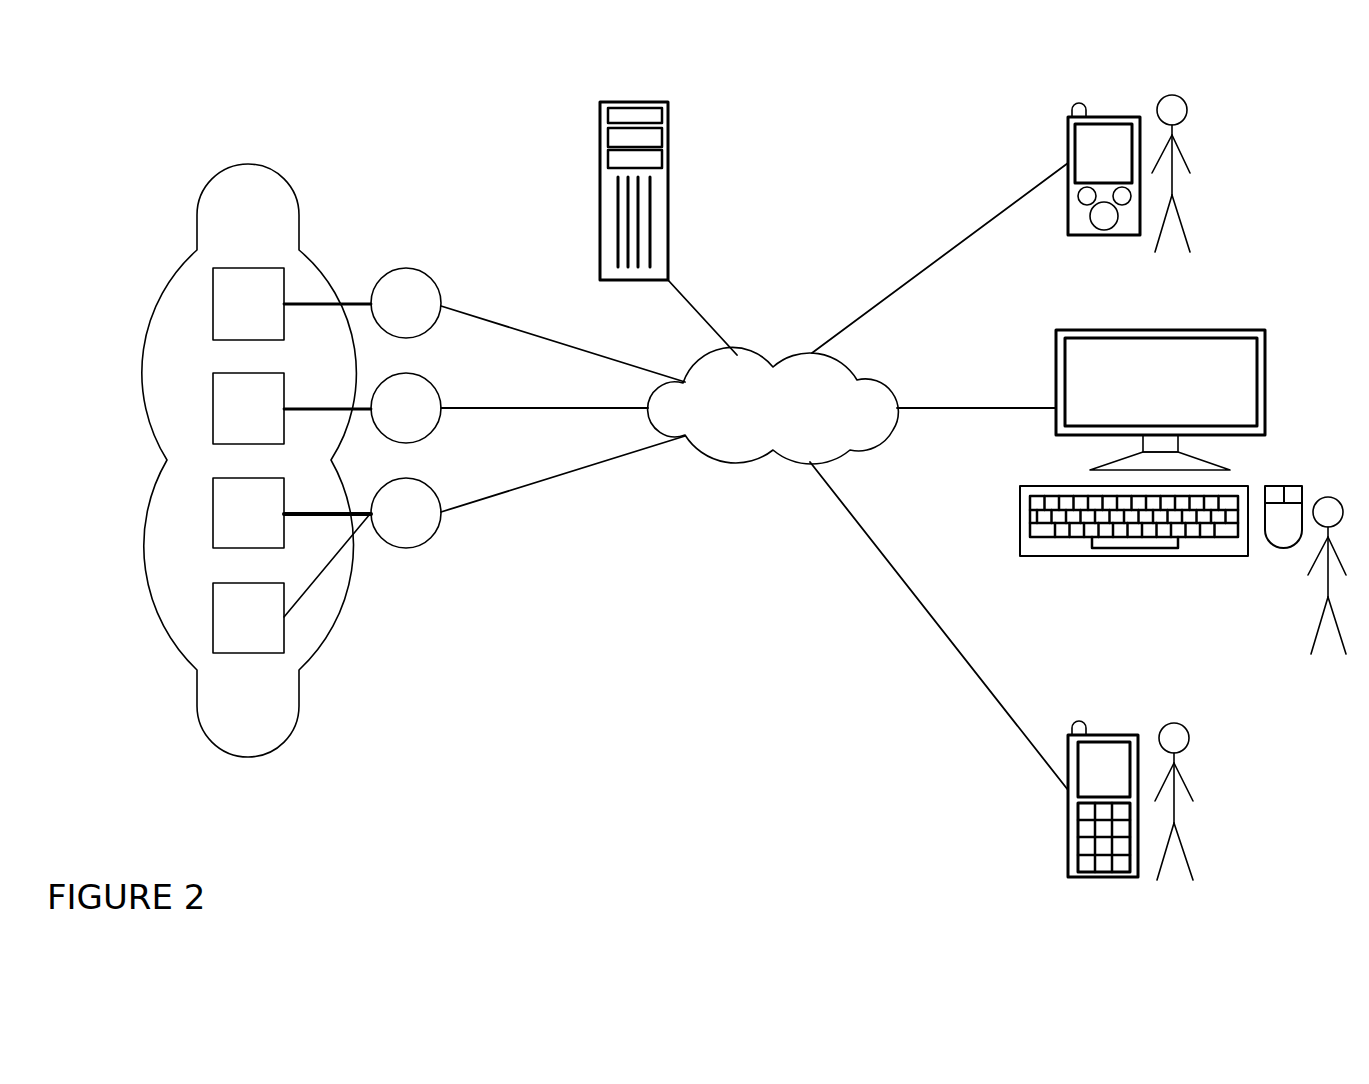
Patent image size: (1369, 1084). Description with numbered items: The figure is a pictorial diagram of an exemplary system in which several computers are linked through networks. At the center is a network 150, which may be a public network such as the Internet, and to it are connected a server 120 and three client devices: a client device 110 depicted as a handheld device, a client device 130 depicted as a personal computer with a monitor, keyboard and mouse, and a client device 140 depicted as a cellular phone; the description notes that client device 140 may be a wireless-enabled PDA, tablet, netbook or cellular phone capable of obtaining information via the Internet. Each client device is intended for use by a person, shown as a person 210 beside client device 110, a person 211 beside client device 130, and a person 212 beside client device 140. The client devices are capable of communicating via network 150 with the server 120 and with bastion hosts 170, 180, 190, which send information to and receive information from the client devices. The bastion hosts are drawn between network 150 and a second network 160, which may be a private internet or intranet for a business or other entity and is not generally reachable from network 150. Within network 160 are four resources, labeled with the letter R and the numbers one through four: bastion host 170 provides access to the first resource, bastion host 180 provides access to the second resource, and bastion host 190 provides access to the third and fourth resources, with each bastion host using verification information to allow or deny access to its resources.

The client device 110 is at (1068, 135).
The server 120 is at (600, 186).
The client device 130 is at (1056, 380).
The client device 140 is at (1068, 816).
The network 150 is at (853, 453).
The network 160 is at (303, 226).
The bastion host 170 is at (362, 303).
The bastion host 180 is at (362, 408).
The bastion host 190 is at (362, 547).
The person 210 is at (1180, 150).
The person 211 is at (1328, 588).
The person 212 is at (1176, 808).